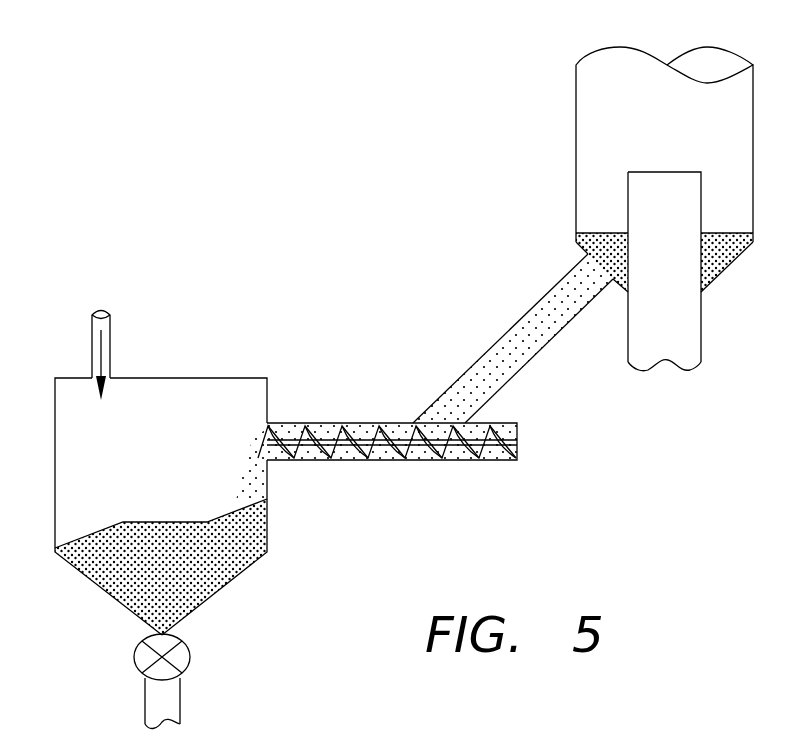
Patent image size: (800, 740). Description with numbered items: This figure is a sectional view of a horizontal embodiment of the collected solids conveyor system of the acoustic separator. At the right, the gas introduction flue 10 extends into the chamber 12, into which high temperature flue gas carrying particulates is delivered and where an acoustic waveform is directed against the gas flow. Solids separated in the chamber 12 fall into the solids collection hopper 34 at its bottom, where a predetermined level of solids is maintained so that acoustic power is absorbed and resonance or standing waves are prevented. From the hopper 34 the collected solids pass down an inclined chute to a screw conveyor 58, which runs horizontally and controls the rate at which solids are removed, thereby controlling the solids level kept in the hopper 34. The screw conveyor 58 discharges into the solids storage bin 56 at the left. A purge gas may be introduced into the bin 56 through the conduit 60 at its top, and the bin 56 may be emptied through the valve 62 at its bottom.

The chamber 12 is at (576, 122).
The gas introduction flue 10 is at (701, 318).
The solids collection hopper 34 is at (735, 258).
The screw conveyor 58 is at (388, 450).
The solids storage bin 56 is at (267, 540).
The conduit 60 is at (110, 330).
The valve 62 is at (190, 652).